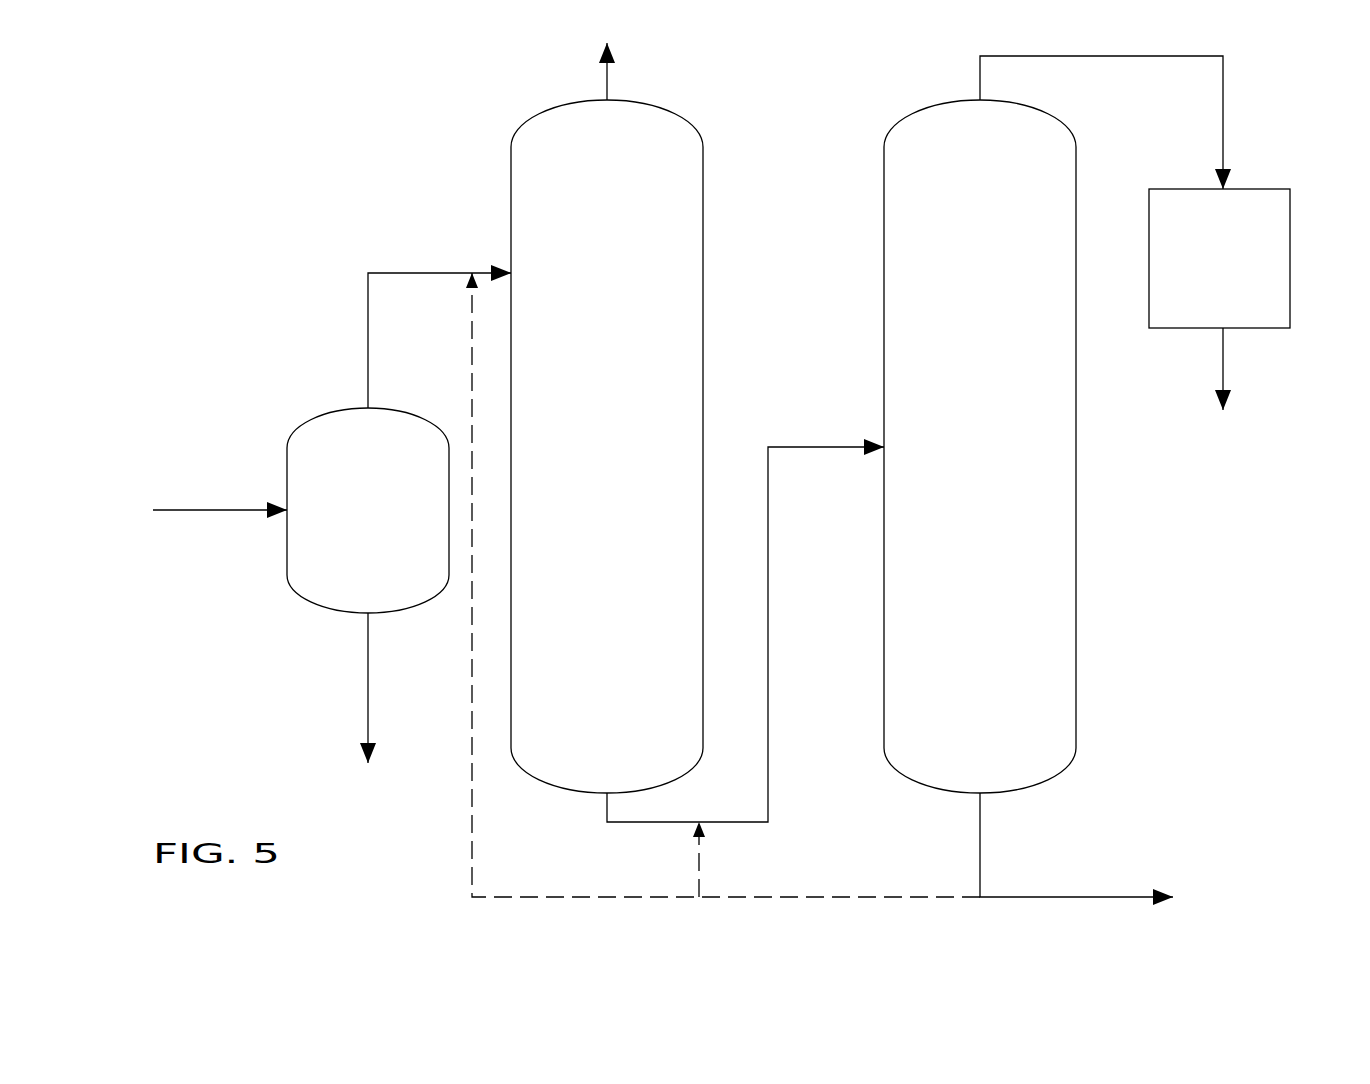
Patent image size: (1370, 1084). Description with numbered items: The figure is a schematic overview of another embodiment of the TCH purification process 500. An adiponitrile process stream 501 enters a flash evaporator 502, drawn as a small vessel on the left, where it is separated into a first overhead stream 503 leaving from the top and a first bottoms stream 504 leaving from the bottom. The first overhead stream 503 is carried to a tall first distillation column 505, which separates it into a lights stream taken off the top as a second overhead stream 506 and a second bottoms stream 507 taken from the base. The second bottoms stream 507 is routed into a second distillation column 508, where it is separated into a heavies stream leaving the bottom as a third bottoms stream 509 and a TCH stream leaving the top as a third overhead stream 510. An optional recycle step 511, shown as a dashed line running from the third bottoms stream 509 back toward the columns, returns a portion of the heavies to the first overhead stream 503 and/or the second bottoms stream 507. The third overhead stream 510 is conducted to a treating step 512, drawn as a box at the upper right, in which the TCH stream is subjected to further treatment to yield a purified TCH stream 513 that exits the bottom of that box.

The TCH purification process 500 is at (290, 172).
The adiponitrile process stream 501 is at (200, 508).
The flash evaporator 502 is at (293, 590).
The first overhead stream 503 is at (378, 272).
The first bottoms stream 504 is at (366, 677).
The first distillation column 505 is at (509, 180).
The second overhead stream 506 is at (602, 90).
The second bottoms stream 507 is at (647, 823).
The second distillation column 508 is at (882, 231).
The third bottoms stream 509 is at (978, 830).
The third overhead stream 510 is at (978, 77).
The recycle step 511 is at (869, 901).
The treating step 512 is at (1264, 189).
The purified TCH stream 513 is at (1225, 360).